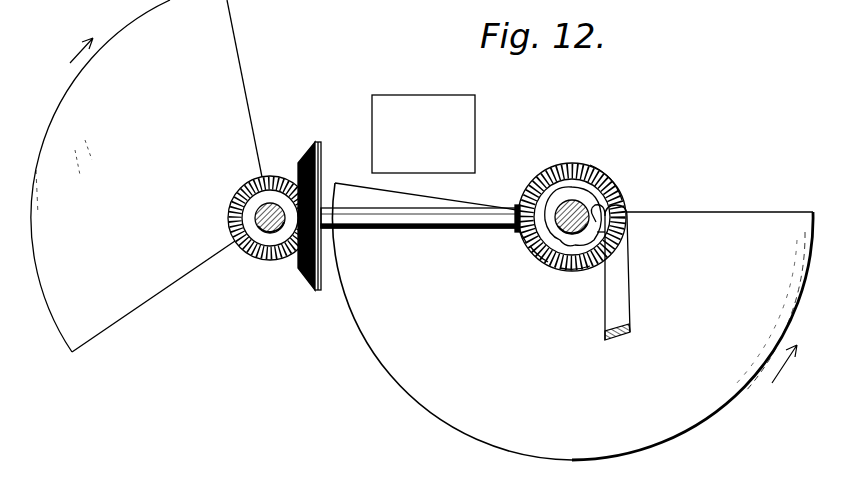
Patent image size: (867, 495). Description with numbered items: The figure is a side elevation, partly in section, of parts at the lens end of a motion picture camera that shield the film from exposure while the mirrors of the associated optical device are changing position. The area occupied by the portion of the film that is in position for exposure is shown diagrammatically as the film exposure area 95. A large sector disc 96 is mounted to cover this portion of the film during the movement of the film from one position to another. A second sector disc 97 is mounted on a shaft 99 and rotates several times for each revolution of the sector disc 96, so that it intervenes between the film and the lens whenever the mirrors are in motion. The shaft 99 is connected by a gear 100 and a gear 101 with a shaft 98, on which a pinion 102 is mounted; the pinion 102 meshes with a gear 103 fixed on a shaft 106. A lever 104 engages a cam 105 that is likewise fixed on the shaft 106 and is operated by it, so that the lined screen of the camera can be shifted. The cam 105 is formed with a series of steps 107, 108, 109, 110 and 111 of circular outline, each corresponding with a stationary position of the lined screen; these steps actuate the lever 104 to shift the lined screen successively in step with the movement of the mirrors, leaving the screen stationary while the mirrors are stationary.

The film exposure area 95 is at (440, 130).
The sector disc 96 is at (707, 405).
The sector disc 97 is at (68, 317).
The shaft 98 is at (437, 227).
The shaft 99 is at (263, 237).
The gear 100 is at (267, 240).
The gear 101 is at (317, 290).
The pinion 102 is at (518, 232).
The gear 103 is at (602, 195).
The lever 104 is at (618, 287).
The cam 105 is at (563, 195).
The shaft 106 is at (585, 198).
The step 107 is at (600, 202).
The step 108 is at (597, 238).
The step 109 is at (577, 268).
The step 110 is at (543, 255).
The step 111 is at (530, 240).